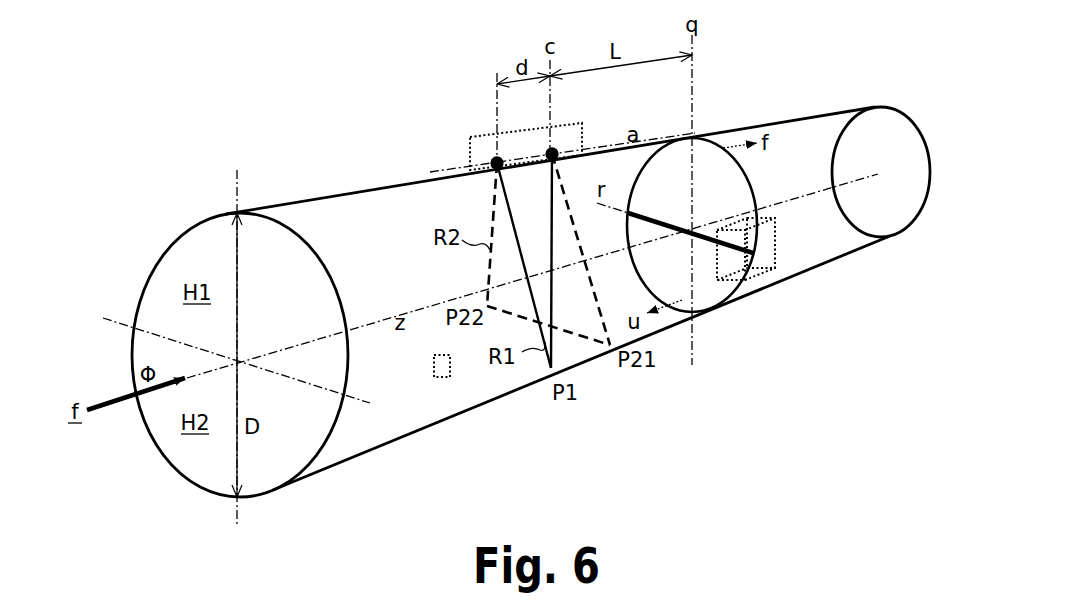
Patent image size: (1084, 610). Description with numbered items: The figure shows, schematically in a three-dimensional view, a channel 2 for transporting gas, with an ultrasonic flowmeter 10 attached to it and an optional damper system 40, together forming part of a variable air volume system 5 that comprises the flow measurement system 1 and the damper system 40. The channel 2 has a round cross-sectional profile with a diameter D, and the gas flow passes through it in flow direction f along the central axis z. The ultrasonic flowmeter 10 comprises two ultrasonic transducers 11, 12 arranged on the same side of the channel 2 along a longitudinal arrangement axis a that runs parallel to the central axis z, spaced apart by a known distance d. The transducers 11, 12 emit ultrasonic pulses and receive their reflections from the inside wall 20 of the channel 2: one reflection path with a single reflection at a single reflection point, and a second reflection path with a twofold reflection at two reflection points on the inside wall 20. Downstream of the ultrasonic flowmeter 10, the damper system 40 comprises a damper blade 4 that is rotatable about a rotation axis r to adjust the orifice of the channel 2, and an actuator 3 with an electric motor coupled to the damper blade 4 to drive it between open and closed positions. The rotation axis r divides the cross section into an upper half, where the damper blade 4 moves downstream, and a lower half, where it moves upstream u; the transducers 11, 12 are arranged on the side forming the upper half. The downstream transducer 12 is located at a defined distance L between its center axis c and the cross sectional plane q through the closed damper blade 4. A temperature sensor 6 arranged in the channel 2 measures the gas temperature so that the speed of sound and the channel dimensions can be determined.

The flow measurement system 1 is at (679, 398).
The channel 2 is at (317, 200).
The inside wall 20 is at (408, 180).
The actuator 3 is at (757, 277).
The damper blade 4 is at (703, 298).
The damper system 40 is at (744, 310).
The variable air volume system 5 is at (252, 129).
The temperature sensor 6 is at (432, 371).
The ultrasonic flowmeter 10 is at (526, 136).
The ultrasonic transducer 11 is at (489, 160).
The ultrasonic transducer 12 is at (557, 149).